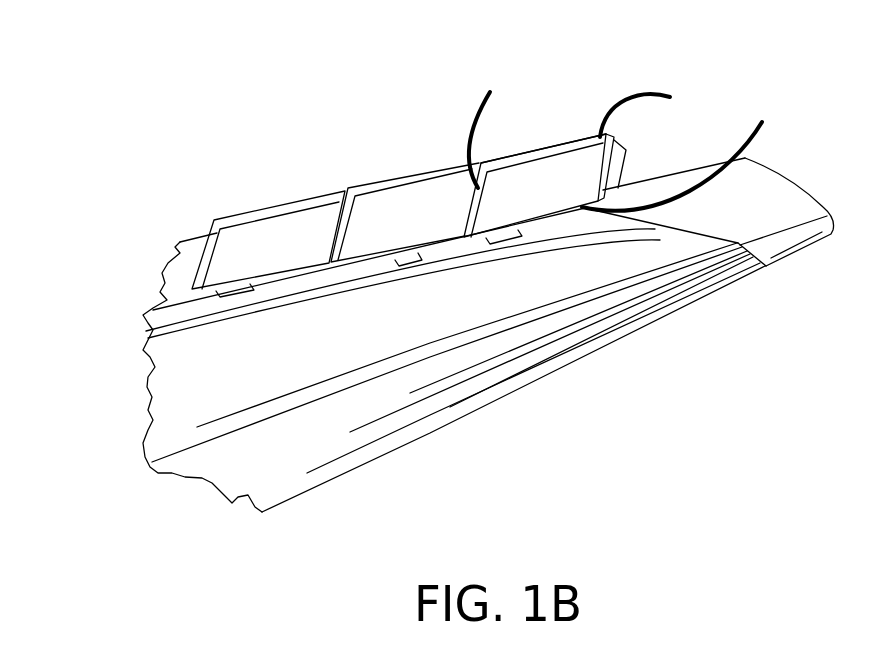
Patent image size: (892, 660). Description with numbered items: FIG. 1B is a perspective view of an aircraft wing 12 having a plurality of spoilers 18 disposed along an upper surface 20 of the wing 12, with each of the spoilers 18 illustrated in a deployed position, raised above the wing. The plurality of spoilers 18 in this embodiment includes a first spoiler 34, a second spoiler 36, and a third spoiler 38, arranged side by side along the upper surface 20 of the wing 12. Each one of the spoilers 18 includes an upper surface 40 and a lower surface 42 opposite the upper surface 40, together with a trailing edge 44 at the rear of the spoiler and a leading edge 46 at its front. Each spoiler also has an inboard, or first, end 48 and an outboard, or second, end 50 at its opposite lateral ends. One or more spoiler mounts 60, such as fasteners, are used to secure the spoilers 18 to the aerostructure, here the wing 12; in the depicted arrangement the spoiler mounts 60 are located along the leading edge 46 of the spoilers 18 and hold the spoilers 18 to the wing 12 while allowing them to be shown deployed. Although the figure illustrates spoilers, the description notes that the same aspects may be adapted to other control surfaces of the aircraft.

The wing 12 is at (110, 161).
The spoiler 18 is at (264, 165).
The upper surface of the wing 20 is at (279, 373).
The first spoiler 34 is at (313, 205).
The second spoiler 36 is at (432, 178).
The third spoiler 38 is at (536, 165).
The upper surface 40 is at (572, 203).
The lower surface 42 is at (670, 97).
The trailing edge 44 is at (582, 138).
The leading edge 46 is at (678, 150).
The inboard end 48 is at (485, 124).
The outboard end 50 is at (618, 188).
The spoiler mount 60 is at (234, 292).